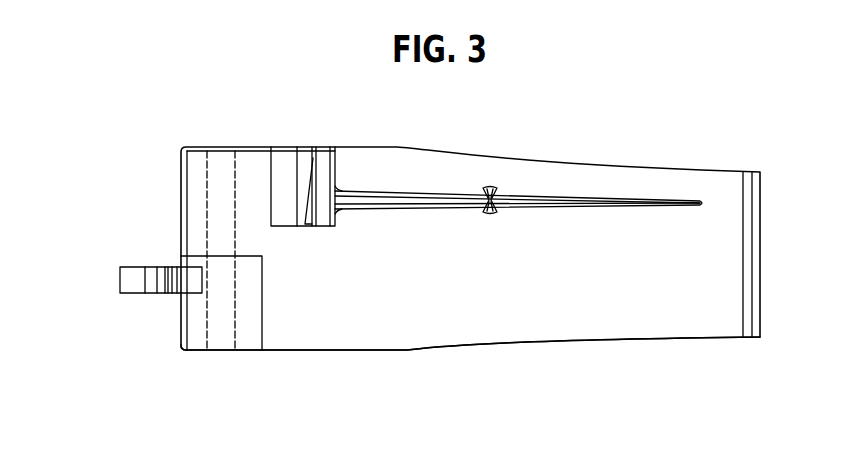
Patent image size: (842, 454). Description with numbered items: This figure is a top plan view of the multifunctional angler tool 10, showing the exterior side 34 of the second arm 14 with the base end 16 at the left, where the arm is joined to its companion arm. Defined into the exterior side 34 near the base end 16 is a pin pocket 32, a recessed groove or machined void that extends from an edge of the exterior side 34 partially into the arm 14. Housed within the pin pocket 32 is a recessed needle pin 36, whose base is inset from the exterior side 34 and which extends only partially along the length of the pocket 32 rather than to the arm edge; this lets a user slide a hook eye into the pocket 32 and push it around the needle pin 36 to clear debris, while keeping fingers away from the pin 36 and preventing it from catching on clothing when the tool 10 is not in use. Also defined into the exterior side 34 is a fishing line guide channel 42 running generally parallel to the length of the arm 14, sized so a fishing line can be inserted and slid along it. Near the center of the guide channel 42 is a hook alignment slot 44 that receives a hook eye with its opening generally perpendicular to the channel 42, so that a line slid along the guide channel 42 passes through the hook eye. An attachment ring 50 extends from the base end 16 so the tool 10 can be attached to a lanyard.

The multifunctional angler tool 10 is at (693, 137).
The second arm 14 is at (530, 358).
The base end 16 is at (195, 175).
The pin pocket 32 is at (283, 133).
The exterior side 34 is at (496, 292).
The needle pin 36 is at (310, 215).
The fishing line guide channel 42 is at (591, 186).
The hook alignment slot 44 is at (495, 178).
The attachment ring 50 is at (138, 282).